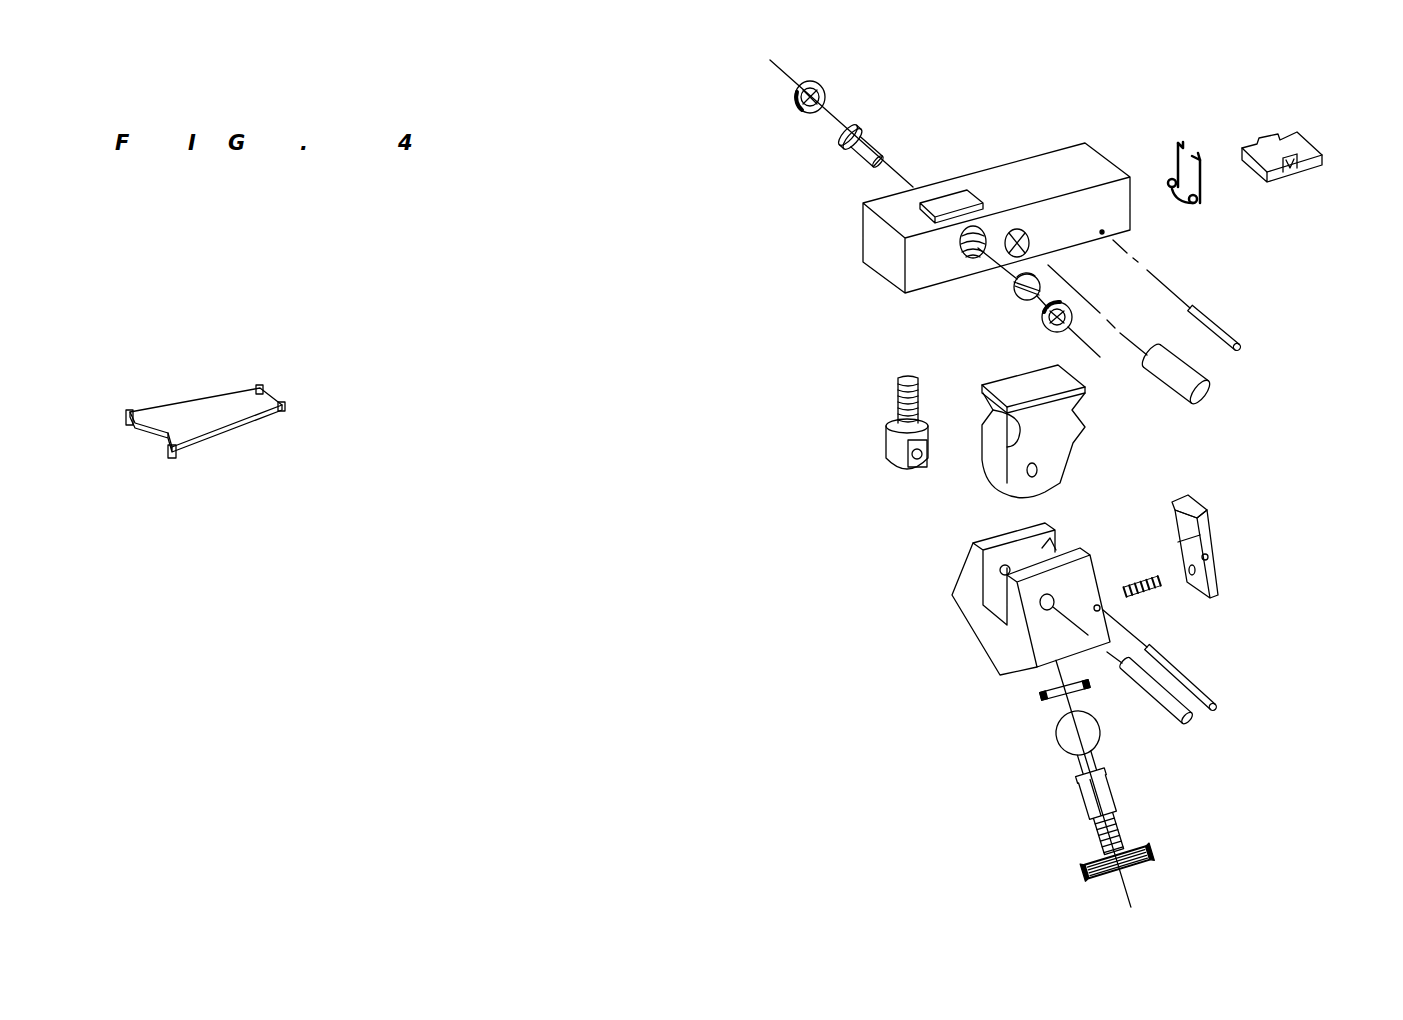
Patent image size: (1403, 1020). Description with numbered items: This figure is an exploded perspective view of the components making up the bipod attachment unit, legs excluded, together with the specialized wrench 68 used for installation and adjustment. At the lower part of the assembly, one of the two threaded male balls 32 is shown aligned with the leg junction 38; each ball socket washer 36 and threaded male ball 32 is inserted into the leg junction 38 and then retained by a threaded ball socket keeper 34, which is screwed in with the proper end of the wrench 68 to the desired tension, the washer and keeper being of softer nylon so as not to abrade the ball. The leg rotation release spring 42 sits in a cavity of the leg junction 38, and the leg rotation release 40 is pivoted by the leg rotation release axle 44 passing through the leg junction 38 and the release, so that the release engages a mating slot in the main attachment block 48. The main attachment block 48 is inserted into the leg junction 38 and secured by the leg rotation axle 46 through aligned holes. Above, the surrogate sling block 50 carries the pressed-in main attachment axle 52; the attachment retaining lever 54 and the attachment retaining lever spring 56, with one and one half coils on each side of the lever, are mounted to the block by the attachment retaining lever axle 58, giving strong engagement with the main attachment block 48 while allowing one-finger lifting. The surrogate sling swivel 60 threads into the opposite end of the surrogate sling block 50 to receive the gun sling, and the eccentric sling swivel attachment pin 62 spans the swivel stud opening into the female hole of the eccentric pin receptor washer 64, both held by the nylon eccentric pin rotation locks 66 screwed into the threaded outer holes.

The threaded male ball 32 is at (1070, 743).
The threaded ball socket keeper 34 is at (1083, 872).
The ball socket washer 36 is at (1040, 692).
The leg junction 38 is at (990, 645).
The leg rotation release 40 is at (1207, 537).
The leg rotation release spring 42 is at (1148, 590).
The leg rotation release axle 44 is at (1180, 675).
The leg rotation axle 46 is at (1163, 698).
The main attachment block 48 is at (1045, 430).
The surrogate sling block 50 is at (1043, 168).
The main attachment axle 52 is at (1200, 392).
The attachment retaining lever 54 is at (1313, 163).
The attachment retaining lever spring 56 is at (1197, 157).
The attachment retaining lever axle 58 is at (1217, 323).
The surrogate sling swivel 60 is at (893, 445).
The eccentric sling swivel attachment pin 62 is at (853, 153).
The eccentric pin receptor washer 64 is at (1015, 283).
The eccentric pin rotation locks 66 is at (793, 88).
The wrench 68 is at (213, 417).